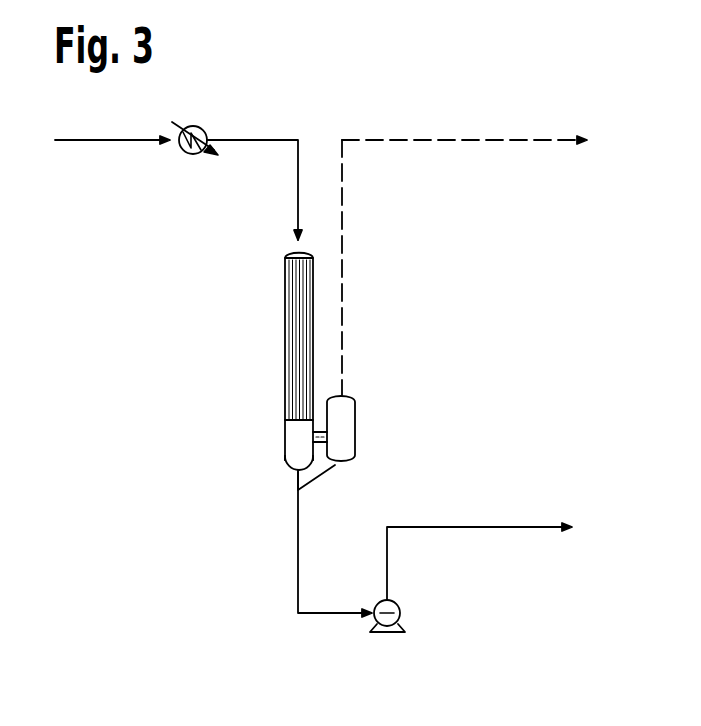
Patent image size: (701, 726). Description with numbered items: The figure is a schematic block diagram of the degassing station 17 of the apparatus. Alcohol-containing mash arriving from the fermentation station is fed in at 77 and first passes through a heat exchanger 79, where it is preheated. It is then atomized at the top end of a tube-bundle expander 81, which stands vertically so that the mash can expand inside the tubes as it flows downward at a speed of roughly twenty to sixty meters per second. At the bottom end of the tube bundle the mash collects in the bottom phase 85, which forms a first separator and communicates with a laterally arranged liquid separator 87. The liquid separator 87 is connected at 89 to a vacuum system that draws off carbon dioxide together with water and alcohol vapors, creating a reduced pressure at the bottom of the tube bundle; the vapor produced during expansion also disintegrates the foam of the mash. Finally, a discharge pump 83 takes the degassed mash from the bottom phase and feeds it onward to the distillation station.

The degassing station 17 is at (458, 328).
The mash feed 77 is at (108, 141).
The heat exchanger 79 is at (205, 128).
The tube-bundle expander 81 is at (284, 328).
The discharge pump 83 is at (400, 616).
The bottom phase 85 is at (290, 448).
The liquid separator 87 is at (348, 428).
The vacuum system connection 89 is at (495, 139).